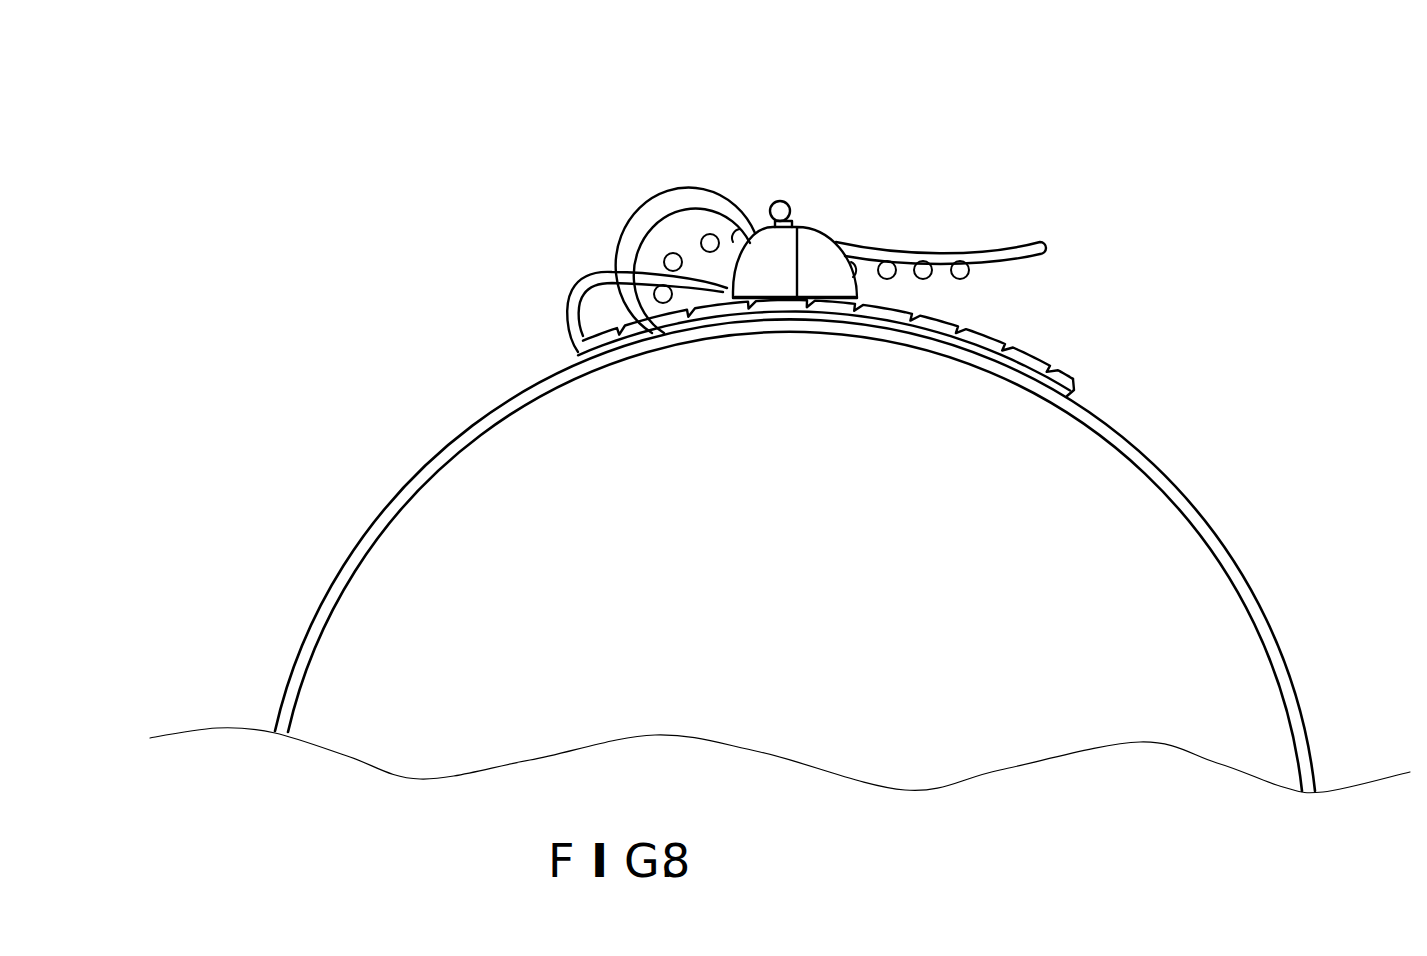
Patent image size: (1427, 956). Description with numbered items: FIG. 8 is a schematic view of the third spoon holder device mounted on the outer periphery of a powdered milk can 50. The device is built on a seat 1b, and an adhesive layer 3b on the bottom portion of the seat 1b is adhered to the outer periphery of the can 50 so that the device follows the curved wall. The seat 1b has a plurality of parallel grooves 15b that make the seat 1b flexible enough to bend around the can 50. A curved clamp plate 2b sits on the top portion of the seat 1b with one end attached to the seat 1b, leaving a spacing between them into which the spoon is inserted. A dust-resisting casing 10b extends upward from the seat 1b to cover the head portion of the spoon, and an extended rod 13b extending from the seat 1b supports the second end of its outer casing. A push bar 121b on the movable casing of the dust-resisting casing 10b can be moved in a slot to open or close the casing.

The can 50 is at (318, 632).
The seat 1b is at (1075, 382).
The curved clamp plate 2b is at (1050, 243).
The adhesive layer 3b is at (1075, 391).
The dust-resisting casing 10b is at (820, 224).
The extended rod 13b is at (588, 288).
The parallel grooves 15b is at (1010, 347).
The push bar 121b is at (780, 201).